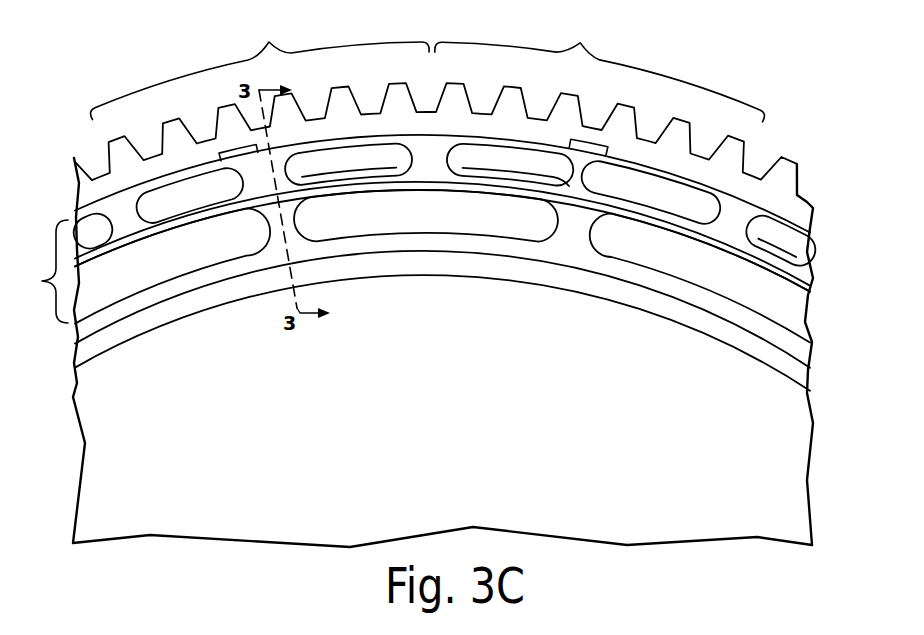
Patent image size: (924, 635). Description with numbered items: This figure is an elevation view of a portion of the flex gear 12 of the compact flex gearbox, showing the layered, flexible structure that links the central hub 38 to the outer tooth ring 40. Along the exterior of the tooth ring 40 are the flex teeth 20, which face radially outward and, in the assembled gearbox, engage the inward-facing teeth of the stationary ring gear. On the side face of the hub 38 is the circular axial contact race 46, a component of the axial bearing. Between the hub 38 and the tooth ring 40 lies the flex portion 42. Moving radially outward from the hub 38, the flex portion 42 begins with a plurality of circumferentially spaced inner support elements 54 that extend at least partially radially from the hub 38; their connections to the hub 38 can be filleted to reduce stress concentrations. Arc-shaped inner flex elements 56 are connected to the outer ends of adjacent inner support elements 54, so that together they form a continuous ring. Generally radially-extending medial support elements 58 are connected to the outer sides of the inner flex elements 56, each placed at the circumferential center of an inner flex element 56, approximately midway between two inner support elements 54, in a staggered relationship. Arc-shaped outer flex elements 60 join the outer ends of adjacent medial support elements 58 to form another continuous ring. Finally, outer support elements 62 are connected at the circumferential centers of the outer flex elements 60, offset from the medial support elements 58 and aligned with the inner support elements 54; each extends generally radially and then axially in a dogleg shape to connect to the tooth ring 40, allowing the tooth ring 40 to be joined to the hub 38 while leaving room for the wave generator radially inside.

The flex gear 12 is at (841, 328).
The flex teeth 20 is at (794, 161).
The hub 38 is at (797, 443).
The tooth ring 40 is at (826, 183).
The flex portion 42 is at (48, 279).
The circular axial contact race 46 is at (578, 296).
The inner support elements 54 is at (302, 222).
The inner flex elements 56 is at (440, 163).
The medial support elements 58 is at (86, 222).
The outer flex elements 60 is at (428, 71).
The outer support elements 62 is at (242, 183).